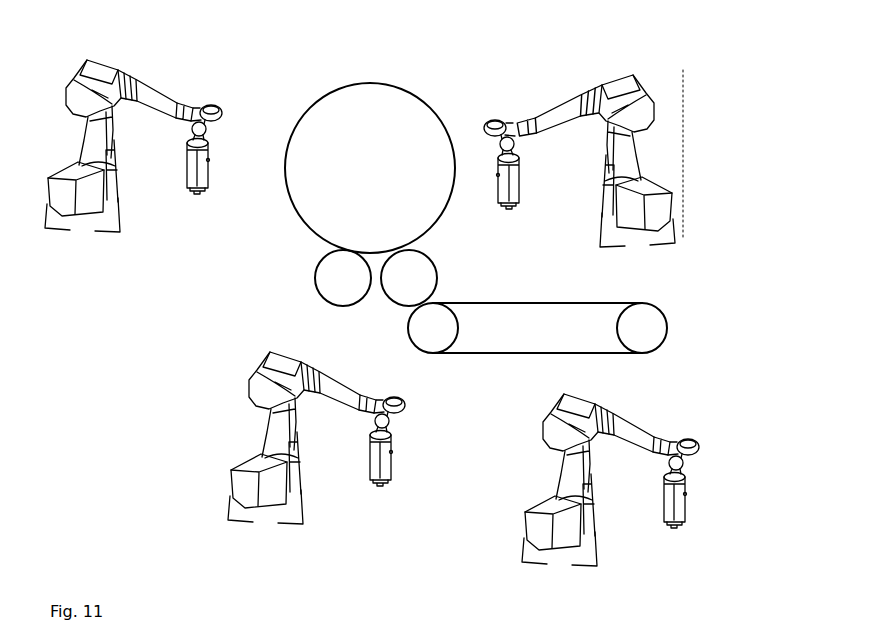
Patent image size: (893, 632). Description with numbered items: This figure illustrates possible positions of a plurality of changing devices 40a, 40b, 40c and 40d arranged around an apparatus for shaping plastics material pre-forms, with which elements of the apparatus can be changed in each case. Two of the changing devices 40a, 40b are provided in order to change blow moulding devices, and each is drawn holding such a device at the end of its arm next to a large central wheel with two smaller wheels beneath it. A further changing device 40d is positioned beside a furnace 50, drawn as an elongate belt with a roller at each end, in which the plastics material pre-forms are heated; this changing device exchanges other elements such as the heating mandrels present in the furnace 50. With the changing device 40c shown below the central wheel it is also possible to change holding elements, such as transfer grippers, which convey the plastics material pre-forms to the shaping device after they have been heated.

The changing device 40a is at (159, 124).
The changing device 40b is at (579, 125).
The changing device 40c is at (402, 460).
The changing device 40d is at (675, 418).
The furnace 50 is at (682, 313).